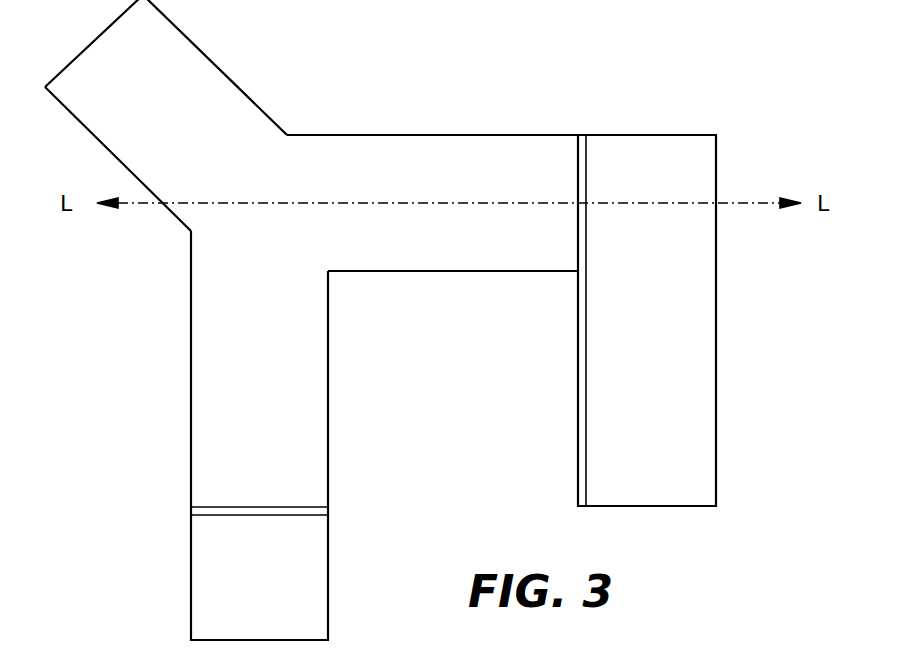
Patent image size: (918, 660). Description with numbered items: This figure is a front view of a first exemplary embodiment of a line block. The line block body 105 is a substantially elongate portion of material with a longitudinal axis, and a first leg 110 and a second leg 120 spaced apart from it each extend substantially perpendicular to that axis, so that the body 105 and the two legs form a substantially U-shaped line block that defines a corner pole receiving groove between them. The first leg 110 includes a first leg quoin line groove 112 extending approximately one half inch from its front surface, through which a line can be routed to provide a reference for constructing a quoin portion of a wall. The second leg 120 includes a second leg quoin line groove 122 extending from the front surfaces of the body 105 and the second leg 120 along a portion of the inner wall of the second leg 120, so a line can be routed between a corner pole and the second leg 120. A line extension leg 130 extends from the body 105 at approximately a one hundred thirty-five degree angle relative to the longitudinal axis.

The line block body 105 is at (431, 158).
The first leg 110 is at (264, 346).
The first leg quoin line groove 112 is at (190, 511).
The second leg 120 is at (681, 328).
The second leg quoin line groove 122 is at (589, 183).
The line extension leg 130 is at (173, 100).